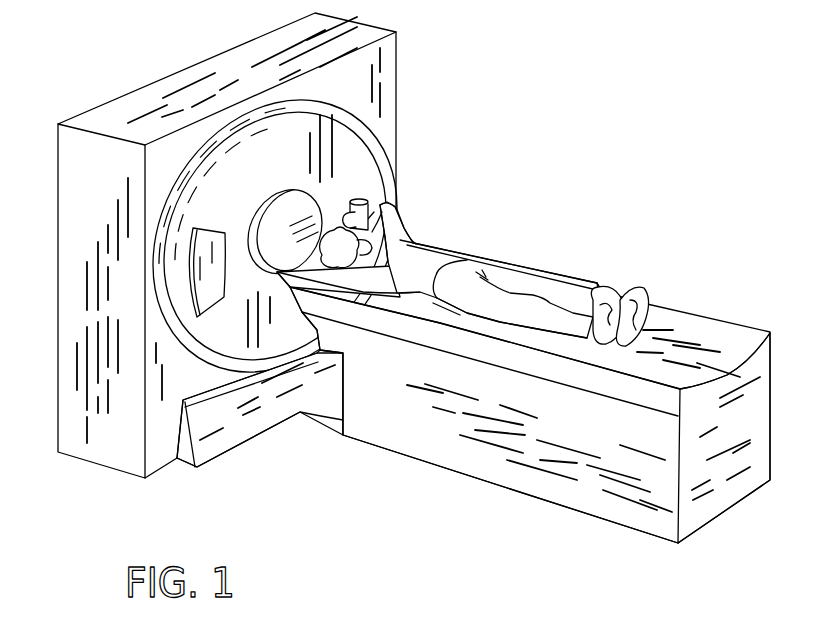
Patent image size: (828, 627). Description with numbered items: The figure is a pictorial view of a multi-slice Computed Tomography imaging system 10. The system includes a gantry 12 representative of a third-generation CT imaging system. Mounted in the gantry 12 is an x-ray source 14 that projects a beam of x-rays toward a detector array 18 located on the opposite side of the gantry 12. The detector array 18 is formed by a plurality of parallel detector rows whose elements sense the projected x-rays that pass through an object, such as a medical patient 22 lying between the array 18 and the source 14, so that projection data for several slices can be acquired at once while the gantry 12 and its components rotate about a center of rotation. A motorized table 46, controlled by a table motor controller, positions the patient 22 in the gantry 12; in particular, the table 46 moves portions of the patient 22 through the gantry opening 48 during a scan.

The CT imaging system 10 is at (314, 432).
The gantry 12 is at (220, 132).
The x-ray source 14 is at (372, 200).
The detector array 18 is at (207, 303).
The patient 22 is at (412, 240).
The motorized table 46 is at (427, 437).
The gantry opening 48 is at (325, 205).